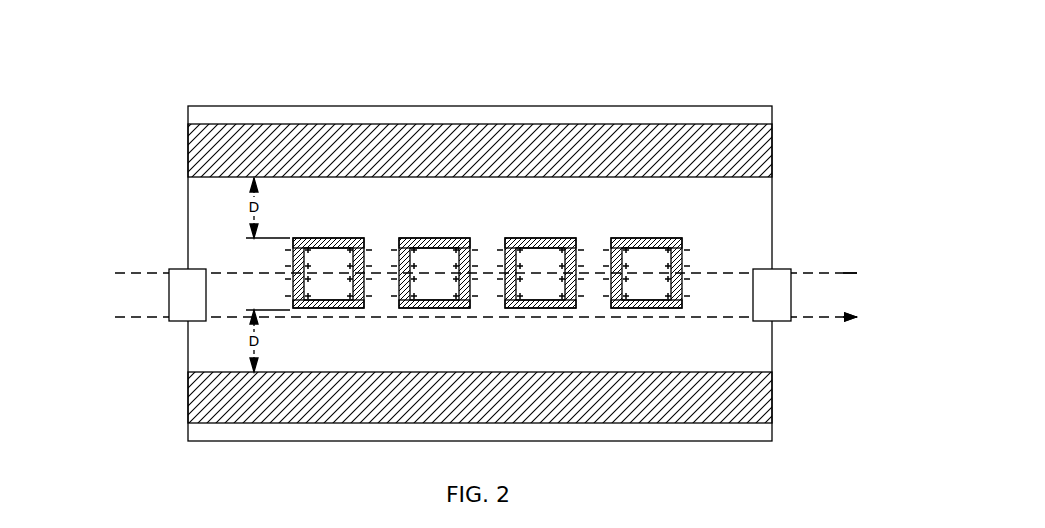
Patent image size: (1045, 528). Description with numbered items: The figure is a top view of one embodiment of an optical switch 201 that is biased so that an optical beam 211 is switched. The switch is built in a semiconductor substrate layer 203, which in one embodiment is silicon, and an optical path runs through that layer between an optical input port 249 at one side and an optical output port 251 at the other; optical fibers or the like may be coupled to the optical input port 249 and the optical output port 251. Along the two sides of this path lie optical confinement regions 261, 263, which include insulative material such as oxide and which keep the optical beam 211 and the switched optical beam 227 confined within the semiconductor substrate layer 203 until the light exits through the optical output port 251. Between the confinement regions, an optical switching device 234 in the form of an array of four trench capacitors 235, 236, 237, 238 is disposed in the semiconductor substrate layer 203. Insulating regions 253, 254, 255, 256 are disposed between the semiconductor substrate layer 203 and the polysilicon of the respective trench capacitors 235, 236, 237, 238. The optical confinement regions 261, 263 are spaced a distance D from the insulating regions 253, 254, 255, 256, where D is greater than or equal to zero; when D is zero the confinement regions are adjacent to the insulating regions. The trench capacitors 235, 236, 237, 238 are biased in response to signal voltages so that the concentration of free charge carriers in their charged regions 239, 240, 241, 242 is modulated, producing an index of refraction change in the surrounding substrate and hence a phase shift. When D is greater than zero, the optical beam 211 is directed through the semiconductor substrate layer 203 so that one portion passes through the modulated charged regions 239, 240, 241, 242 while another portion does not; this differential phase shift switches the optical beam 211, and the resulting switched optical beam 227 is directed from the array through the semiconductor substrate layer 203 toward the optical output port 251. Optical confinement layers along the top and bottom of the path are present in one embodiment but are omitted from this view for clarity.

The optical switch 201 is at (703, 57).
The semiconductor substrate layer 203 is at (773, 212).
The optical beam 211 is at (107, 266).
The switched optical beam 227 is at (862, 265).
The optical switching device 234 is at (518, 279).
The trench capacitor 235 is at (332, 238).
The trench capacitor 236 is at (438, 238).
The trench capacitor 237 is at (544, 238).
The trench capacitor 238 is at (647, 238).
The charged region 239 is at (291, 311).
The charged region 240 is at (397, 311).
The charged region 241 is at (503, 311).
The charged region 242 is at (609, 311).
The optical input port 249 is at (177, 269).
The optical output port 251 is at (776, 269).
The insulating region 253 is at (340, 238).
The insulating region 254 is at (447, 238).
The insulating region 255 is at (554, 238).
The insulating region 256 is at (663, 238).
The optical confinement region 261 is at (773, 156).
The optical confinement region 263 is at (773, 401).